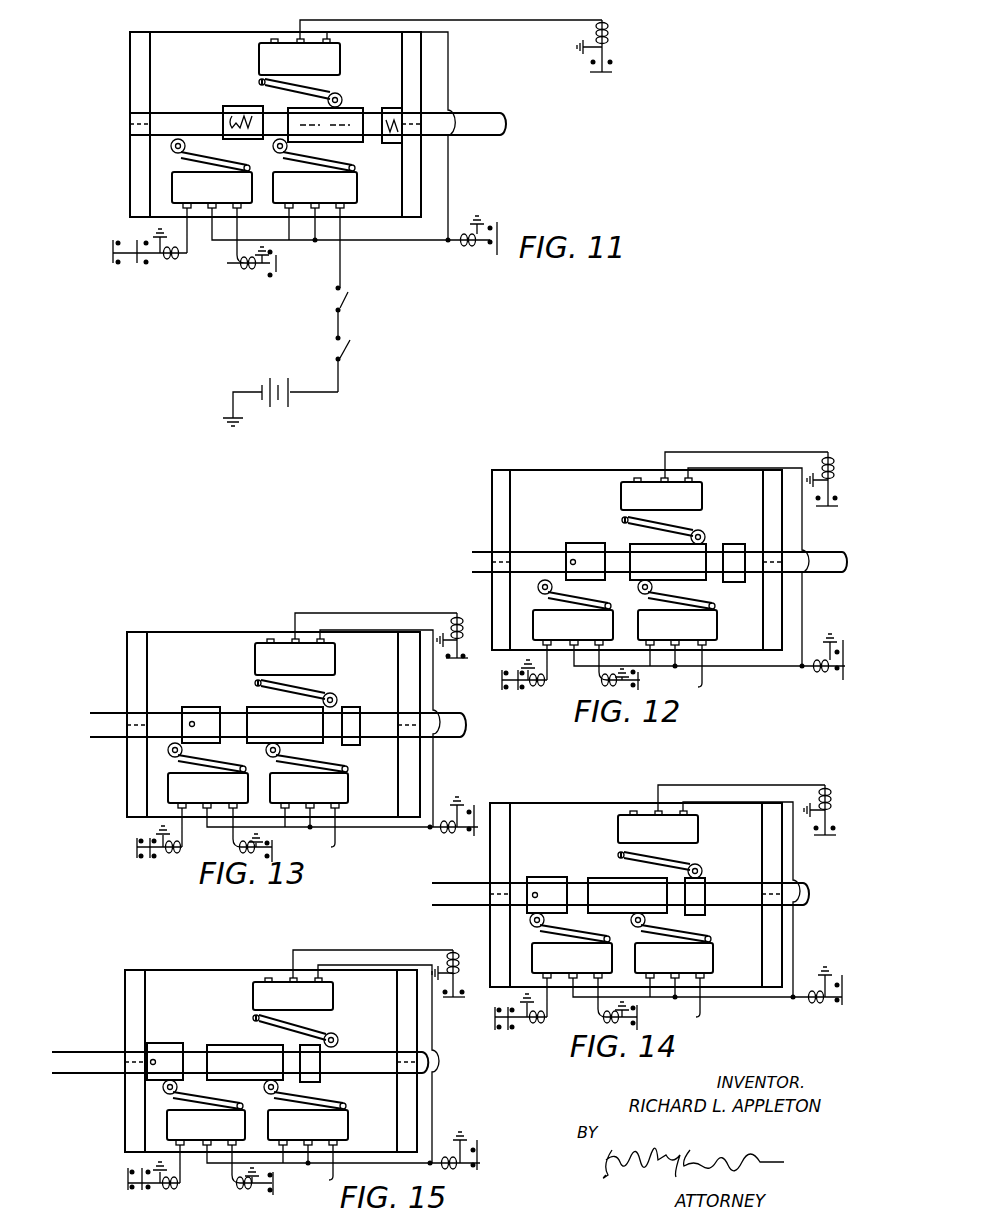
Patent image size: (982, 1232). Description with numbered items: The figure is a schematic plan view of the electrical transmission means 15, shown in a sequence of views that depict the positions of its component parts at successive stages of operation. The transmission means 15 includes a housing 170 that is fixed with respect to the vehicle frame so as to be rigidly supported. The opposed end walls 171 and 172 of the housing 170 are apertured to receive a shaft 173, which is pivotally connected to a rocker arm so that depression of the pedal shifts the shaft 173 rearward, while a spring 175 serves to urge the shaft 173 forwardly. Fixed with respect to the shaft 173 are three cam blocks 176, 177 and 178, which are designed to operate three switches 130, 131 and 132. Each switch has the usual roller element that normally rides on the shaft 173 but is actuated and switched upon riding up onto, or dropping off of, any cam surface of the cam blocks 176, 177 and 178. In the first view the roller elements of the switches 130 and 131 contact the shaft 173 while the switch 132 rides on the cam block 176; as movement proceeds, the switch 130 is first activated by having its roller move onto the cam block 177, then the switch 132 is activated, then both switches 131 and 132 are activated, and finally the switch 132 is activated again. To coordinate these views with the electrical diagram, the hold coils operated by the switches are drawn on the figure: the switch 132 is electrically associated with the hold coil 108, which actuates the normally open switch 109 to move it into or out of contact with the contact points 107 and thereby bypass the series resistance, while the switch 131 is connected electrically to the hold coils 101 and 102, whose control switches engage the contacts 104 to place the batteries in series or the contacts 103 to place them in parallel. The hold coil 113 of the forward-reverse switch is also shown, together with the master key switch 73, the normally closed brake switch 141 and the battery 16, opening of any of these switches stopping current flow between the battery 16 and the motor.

In FIG. 11, the transmission means 15 is at (128, 40).
In FIG. 12, the transmission means 15 is at (588, 464).
In FIG. 13, the transmission means 15 is at (202, 630).
In FIG. 14, the transmission means 15 is at (575, 797).
In FIG. 15, the transmission means 15 is at (192, 965).
In FIG. 11, the battery 16 is at (290, 400).
In FIG. 11, the master key switch 73 is at (350, 354).
In FIG. 11, the hold coil 101 is at (242, 272).
In FIG. 12, the hold coil 101 is at (602, 686).
In FIG. 13, the hold coil 101 is at (236, 850).
In FIG. 14, the hold coil 101 is at (600, 1018).
In FIG. 15, the hold coil 101 is at (240, 1190).
In FIG. 11, the hold coil 102 is at (172, 262).
In FIG. 12, the hold coil 102 is at (540, 688).
In FIG. 13, the hold coil 102 is at (170, 855).
In FIG. 14, the hold coil 102 is at (532, 1024).
In FIG. 15, the hold coil 102 is at (170, 1190).
In FIG. 11, the contacts 103 is at (146, 266).
In FIG. 12, the contacts 103 is at (522, 690).
In FIG. 13, the contacts 103 is at (152, 860).
In FIG. 14, the contacts 103 is at (514, 1032).
In FIG. 15, the contacts 103 is at (148, 1190).
In FIG. 11, the contacts 104 is at (268, 277).
In FIG. 12, the contacts 104 is at (640, 690).
In FIG. 13, the contacts 104 is at (274, 841).
In FIG. 14, the contacts 104 is at (640, 1010).
In FIG. 15, the contacts 104 is at (272, 1192).
In FIG. 11, the contact points 107 is at (612, 58).
In FIG. 12, the contact points 107 is at (836, 494).
In FIG. 13, the contact points 107 is at (464, 656).
In FIG. 14, the contact points 107 is at (835, 832).
In FIG. 15, the contact points 107 is at (446, 996).
In FIG. 11, the hold coil 108 is at (607, 28).
In FIG. 12, the hold coil 108 is at (818, 458).
In FIG. 13, the hold coil 108 is at (462, 630).
In FIG. 14, the hold coil 108 is at (829, 790).
In FIG. 15, the hold coil 108 is at (460, 958).
In FIG. 11, the switch 109 is at (604, 75).
In FIG. 12, the switch 109 is at (825, 448).
In FIG. 13, the switch 109 is at (455, 612).
In FIG. 14, the switch 109 is at (824, 783).
In FIG. 15, the switch 109 is at (452, 952).
In FIG. 11, the hold coil 113 is at (468, 250).
In FIG. 12, the hold coil 113 is at (820, 672).
In FIG. 13, the hold coil 113 is at (443, 820).
In FIG. 14, the hold coil 113 is at (824, 1004).
In FIG. 15, the hold coil 113 is at (470, 1158).
In FIG. 11, the switch 130 is at (315, 173).
In FIG. 12, the switch 130 is at (677, 612).
In FIG. 13, the switch 130 is at (307, 775).
In FIG. 14, the switch 130 is at (672, 945).
In FIG. 15, the switch 130 is at (306, 1112).
In FIG. 11, the switch 131 is at (211, 173).
In FIG. 12, the switch 131 is at (573, 612).
In FIG. 13, the switch 131 is at (208, 775).
In FIG. 14, the switch 131 is at (571, 945).
In FIG. 15, the switch 131 is at (204, 1112).
In FIG. 11, the switch 132 is at (300, 73).
In FIG. 12, the switch 132 is at (663, 511).
In FIG. 13, the switch 132 is at (296, 673).
In FIG. 14, the switch 132 is at (660, 844).
In FIG. 15, the switch 132 is at (295, 1012).
In FIG. 11, the brake switch 141 is at (345, 298).
In FIG. 11, the housing 170 is at (130, 62).
In FIG. 12, the housing 170 is at (502, 506).
In FIG. 13, the housing 170 is at (128, 668).
In FIG. 14, the housing 170 is at (488, 848).
In FIG. 15, the housing 170 is at (125, 998).
In FIG. 11, the end wall 171 is at (148, 96).
In FIG. 12, the end wall 171 is at (500, 520).
In FIG. 13, the end wall 171 is at (137, 685).
In FIG. 14, the end wall 171 is at (498, 858).
In FIG. 15, the end wall 171 is at (133, 1018).
In FIG. 11, the end wall 172 is at (426, 62).
In FIG. 12, the end wall 172 is at (773, 528).
In FIG. 13, the end wall 172 is at (409, 724).
In FIG. 14, the end wall 172 is at (772, 948).
In FIG. 15, the end wall 172 is at (408, 1124).
In FIG. 11, the shaft 173 is at (480, 128).
In FIG. 12, the shaft 173 is at (825, 563).
In FIG. 13, the shaft 173 is at (457, 725).
In FIG. 14, the shaft 173 is at (805, 888).
In FIG. 15, the shaft 173 is at (425, 1058).
In FIG. 11, the spring 175 is at (392, 106).
In FIG. 11, the cam block 176 is at (240, 106).
In FIG. 12, the cam block 176 is at (580, 543).
In FIG. 13, the cam block 176 is at (197, 707).
In FIG. 14, the cam block 176 is at (547, 877).
In FIG. 15, the cam block 176 is at (167, 1045).
In FIG. 11, the cam block 177 is at (285, 110).
In FIG. 12, the cam block 177 is at (640, 545).
In FIG. 13, the cam block 177 is at (252, 707).
In FIG. 14, the cam block 177 is at (598, 878).
In FIG. 15, the cam block 177 is at (223, 1047).
In FIG. 11, the cam block 178 is at (392, 144).
In FIG. 12, the cam block 178 is at (730, 545).
In FIG. 13, the cam block 178 is at (352, 707).
In FIG. 14, the cam block 178 is at (708, 878).
In FIG. 15, the cam block 178 is at (322, 1080).